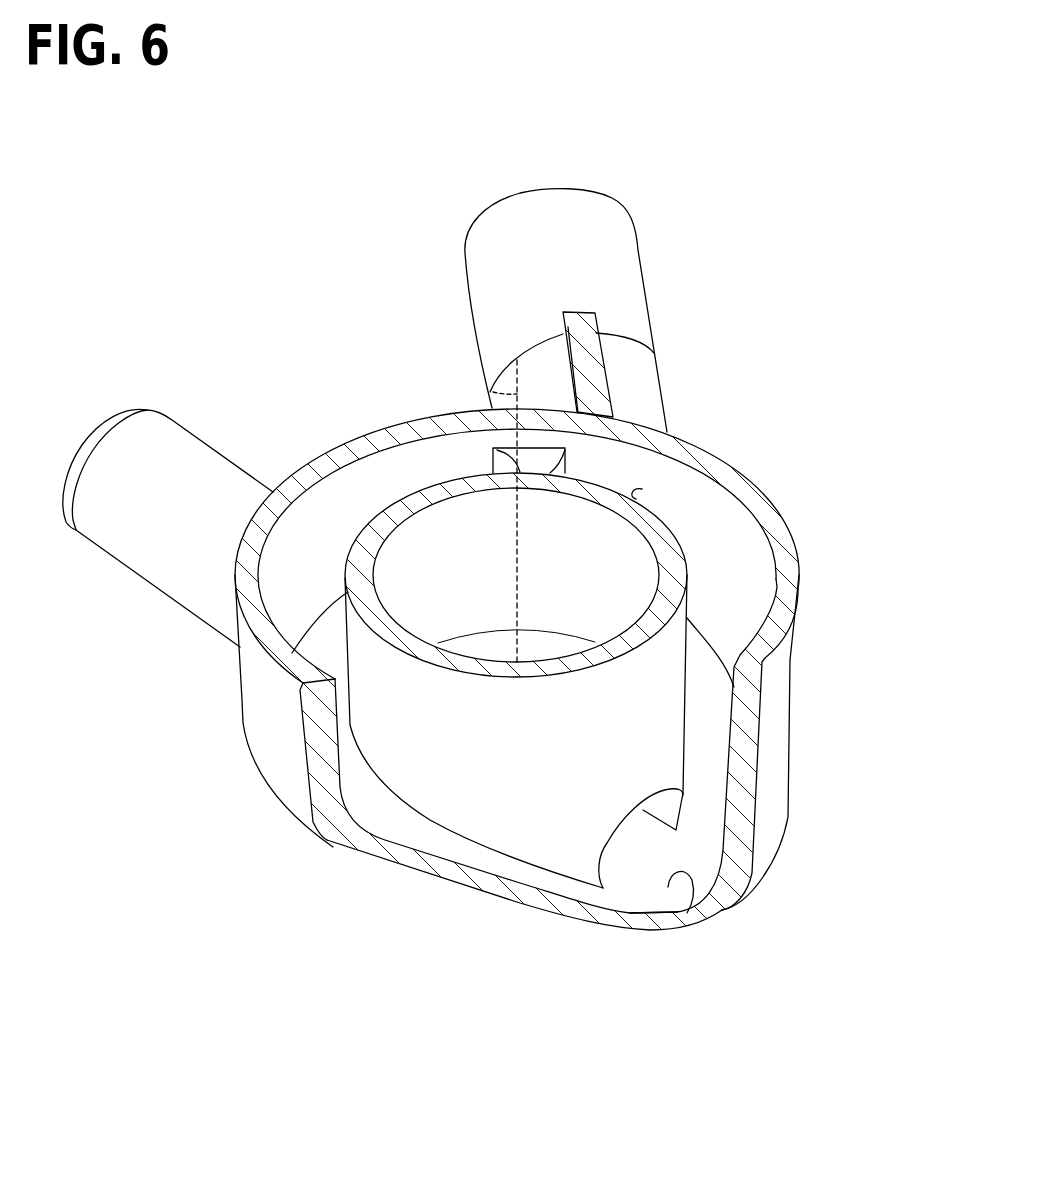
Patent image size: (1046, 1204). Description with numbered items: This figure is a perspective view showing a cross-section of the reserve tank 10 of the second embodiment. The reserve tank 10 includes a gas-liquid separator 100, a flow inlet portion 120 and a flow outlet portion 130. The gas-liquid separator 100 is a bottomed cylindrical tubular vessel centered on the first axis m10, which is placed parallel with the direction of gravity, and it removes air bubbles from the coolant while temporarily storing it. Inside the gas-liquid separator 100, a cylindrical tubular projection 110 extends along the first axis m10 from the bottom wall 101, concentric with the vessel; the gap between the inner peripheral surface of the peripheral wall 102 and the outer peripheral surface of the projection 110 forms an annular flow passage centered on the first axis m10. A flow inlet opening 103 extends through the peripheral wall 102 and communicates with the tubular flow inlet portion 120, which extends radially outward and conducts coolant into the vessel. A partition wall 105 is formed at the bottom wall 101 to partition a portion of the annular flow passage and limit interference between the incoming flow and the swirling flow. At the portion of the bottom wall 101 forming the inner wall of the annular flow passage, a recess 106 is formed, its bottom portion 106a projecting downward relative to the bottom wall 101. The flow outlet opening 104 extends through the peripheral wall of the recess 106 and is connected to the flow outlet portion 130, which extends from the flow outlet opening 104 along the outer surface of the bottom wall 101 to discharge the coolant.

The reserve tank 10 is at (777, 180).
The gas-liquid separator 100 is at (795, 737).
The bottom wall 101 is at (440, 877).
The peripheral wall 102 is at (738, 478).
The flow inlet opening 103 is at (642, 489).
The flow outlet opening 104 is at (608, 848).
The partition wall 105 is at (498, 463).
The recess 106 is at (687, 920).
The bottom portion 106a is at (653, 930).
The projection 110 is at (692, 560).
The flow inlet portion 120 is at (647, 294).
The flow outlet portion 130 is at (202, 440).
The first axis m10 is at (490, 390).